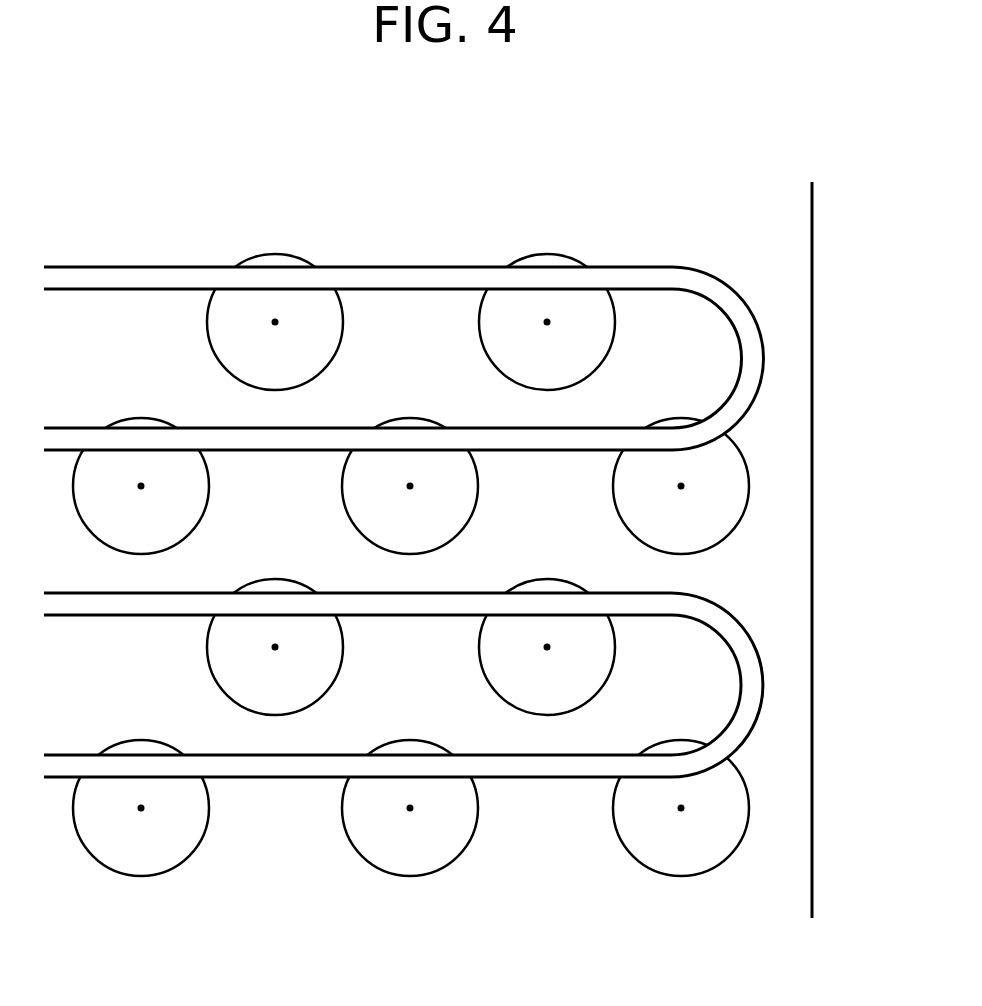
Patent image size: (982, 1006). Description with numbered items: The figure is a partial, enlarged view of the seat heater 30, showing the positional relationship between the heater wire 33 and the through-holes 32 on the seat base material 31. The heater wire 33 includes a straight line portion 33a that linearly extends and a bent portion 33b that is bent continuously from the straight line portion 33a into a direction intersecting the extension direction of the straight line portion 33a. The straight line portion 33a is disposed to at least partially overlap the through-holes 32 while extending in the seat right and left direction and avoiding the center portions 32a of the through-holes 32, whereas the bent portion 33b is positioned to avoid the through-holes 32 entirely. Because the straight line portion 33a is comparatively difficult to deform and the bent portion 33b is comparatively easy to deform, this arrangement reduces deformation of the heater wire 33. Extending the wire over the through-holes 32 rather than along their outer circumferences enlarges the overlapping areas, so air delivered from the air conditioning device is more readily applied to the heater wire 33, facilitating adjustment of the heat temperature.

The seat heater 30 is at (84, 166).
The seat base material 31 is at (780, 570).
The through-holes 32 is at (412, 853).
The center portions 32a is at (412, 808).
The heater wire 33 is at (183, 262).
The straight line portion 33a is at (416, 278).
The bent portion 33b is at (752, 358).